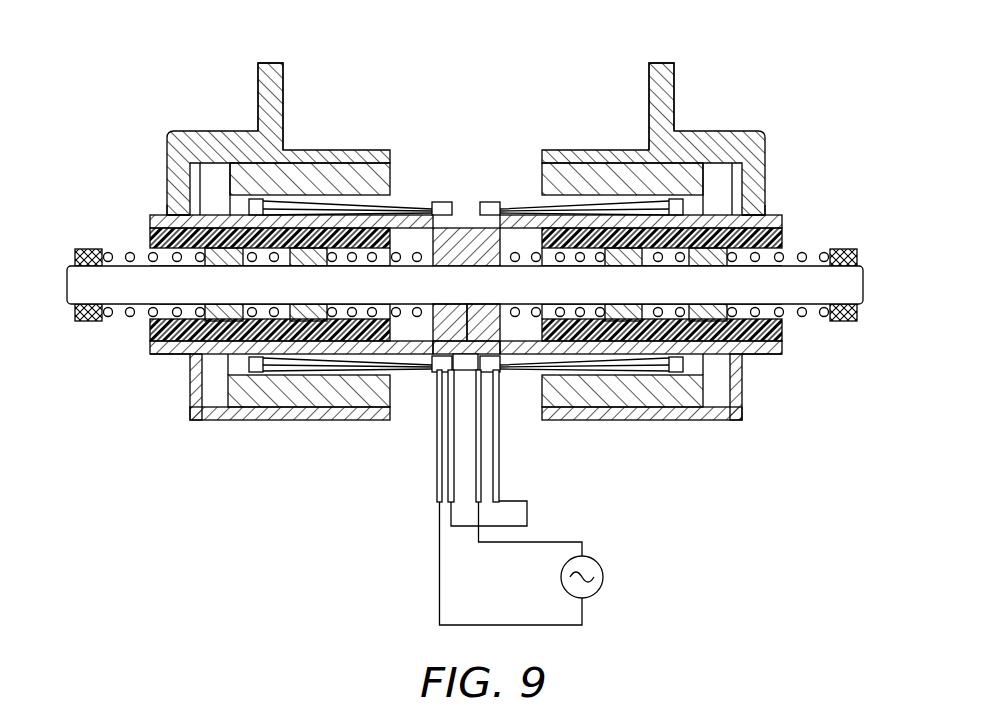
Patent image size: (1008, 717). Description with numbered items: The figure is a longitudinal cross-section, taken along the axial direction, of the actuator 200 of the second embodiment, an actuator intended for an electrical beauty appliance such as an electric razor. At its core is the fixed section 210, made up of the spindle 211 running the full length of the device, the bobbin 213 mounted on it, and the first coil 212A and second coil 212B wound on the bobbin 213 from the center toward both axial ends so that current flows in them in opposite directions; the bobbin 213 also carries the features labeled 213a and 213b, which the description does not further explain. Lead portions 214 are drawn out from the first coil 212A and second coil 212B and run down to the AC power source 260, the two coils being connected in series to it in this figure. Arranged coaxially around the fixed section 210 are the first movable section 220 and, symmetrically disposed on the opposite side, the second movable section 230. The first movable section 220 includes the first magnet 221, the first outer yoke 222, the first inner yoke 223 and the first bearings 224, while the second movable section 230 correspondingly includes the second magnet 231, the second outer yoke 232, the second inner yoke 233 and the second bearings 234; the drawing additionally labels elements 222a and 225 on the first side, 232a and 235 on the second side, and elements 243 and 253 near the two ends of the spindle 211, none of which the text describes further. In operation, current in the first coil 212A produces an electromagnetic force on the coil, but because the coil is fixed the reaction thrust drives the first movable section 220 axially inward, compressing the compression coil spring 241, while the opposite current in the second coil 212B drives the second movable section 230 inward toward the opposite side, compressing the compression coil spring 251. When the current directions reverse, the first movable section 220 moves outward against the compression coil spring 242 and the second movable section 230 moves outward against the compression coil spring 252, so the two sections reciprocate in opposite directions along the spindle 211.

The actuator 200 is at (303, 474).
The fixed section 210 is at (446, 182).
The spindle 211 is at (803, 283).
The first coil 212A is at (635, 377).
The second coil 212B is at (279, 358).
The bobbin 213 is at (397, 347).
The first rotor portion 213a is at (482, 325).
The second rotor portion 213b is at (453, 300).
The lead portions 214 is at (479, 438).
The first movable section 220 is at (594, 83).
The first magnet 221 is at (600, 178).
The first outer yoke 222 is at (552, 162).
The first housing flange 222a is at (765, 215).
The first inner yoke 223 is at (785, 228).
The first bearings 224 is at (650, 250).
The first mounting leg 225 is at (670, 97).
The second movable section 230 is at (354, 86).
The second magnet 231 is at (322, 178).
The second outer yoke 232 is at (372, 158).
The second housing flange 232a is at (170, 216).
The second inner yoke 233 is at (153, 228).
The second bearings 234 is at (307, 250).
The second mounting leg 235 is at (283, 95).
The compression coil spring 241 is at (512, 254).
The compression coil spring 242 is at (788, 260).
The first end bearing 243 is at (846, 252).
The compression coil spring 251 is at (396, 254).
The compression coil spring 252 is at (127, 256).
The second end bearing 253 is at (78, 252).
The AC power source 260 is at (597, 559).